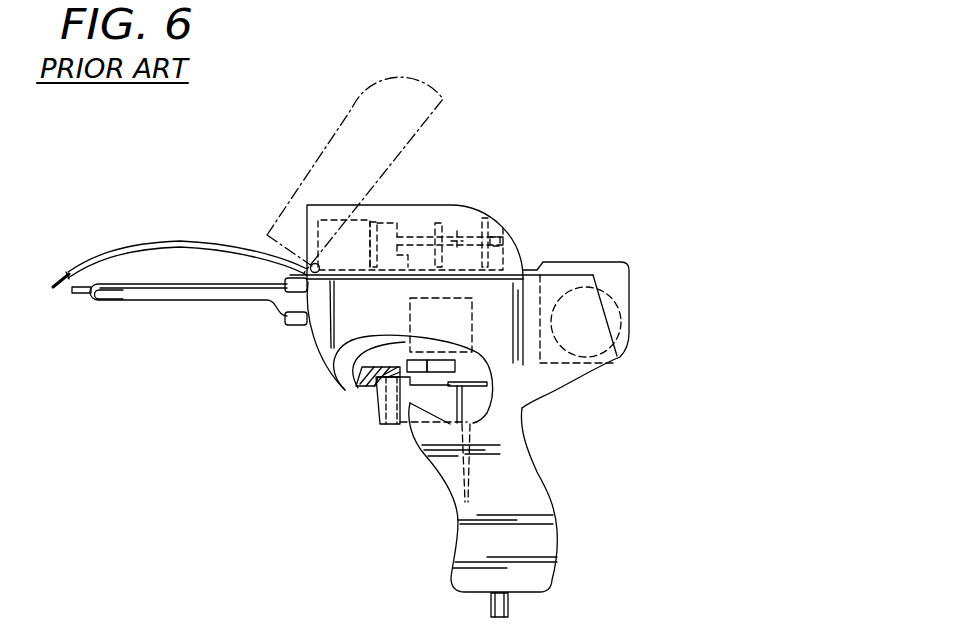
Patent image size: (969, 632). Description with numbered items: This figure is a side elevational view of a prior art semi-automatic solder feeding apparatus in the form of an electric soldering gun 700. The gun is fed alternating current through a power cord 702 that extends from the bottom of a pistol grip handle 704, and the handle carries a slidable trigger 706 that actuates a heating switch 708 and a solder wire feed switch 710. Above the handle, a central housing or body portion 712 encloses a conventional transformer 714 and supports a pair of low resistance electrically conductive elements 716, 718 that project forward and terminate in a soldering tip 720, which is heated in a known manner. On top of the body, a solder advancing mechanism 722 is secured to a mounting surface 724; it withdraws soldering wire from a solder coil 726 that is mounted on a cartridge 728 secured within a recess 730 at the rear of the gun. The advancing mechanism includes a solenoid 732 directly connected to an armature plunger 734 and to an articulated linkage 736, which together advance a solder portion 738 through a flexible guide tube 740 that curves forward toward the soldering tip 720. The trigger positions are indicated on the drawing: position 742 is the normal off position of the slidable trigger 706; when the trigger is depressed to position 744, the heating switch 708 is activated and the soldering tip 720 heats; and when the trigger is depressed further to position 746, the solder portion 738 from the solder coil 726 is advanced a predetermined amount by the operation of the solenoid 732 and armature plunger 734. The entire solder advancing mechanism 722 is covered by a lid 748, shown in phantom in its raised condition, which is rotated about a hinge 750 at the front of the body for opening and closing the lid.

The electric soldering gun 700 is at (563, 162).
The power cord 702 is at (491, 607).
The pistol grip handle 704 is at (541, 500).
The slidable trigger 706 is at (377, 404).
The heating switch 708 is at (340, 375).
The solder wire feed switch 710 is at (455, 366).
The central housing or body portion 712 is at (318, 340).
The transformer 714 is at (436, 349).
The low resistance electrically conductive element 716 is at (182, 303).
The low resistance electrically conductive element 718 is at (122, 296).
The soldering tip 720 is at (72, 292).
The solder advancing mechanism 722 is at (490, 228).
The mounting surface 724 is at (505, 274).
The solder coil 726 is at (603, 323).
The cartridge 728 is at (624, 282).
The recess 730 is at (567, 287).
The solenoid 732 is at (345, 233).
The armature plunger 734 is at (380, 242).
The articulated linkage 736 is at (420, 238).
The solder portion 738 is at (56, 279).
The flexible guide tube 740 is at (180, 243).
The normal off position 742 is at (379, 425).
The trigger position 744 is at (384, 424).
The trigger position 746 is at (399, 424).
The lid 748 is at (356, 105).
The hinge 750 is at (331, 282).